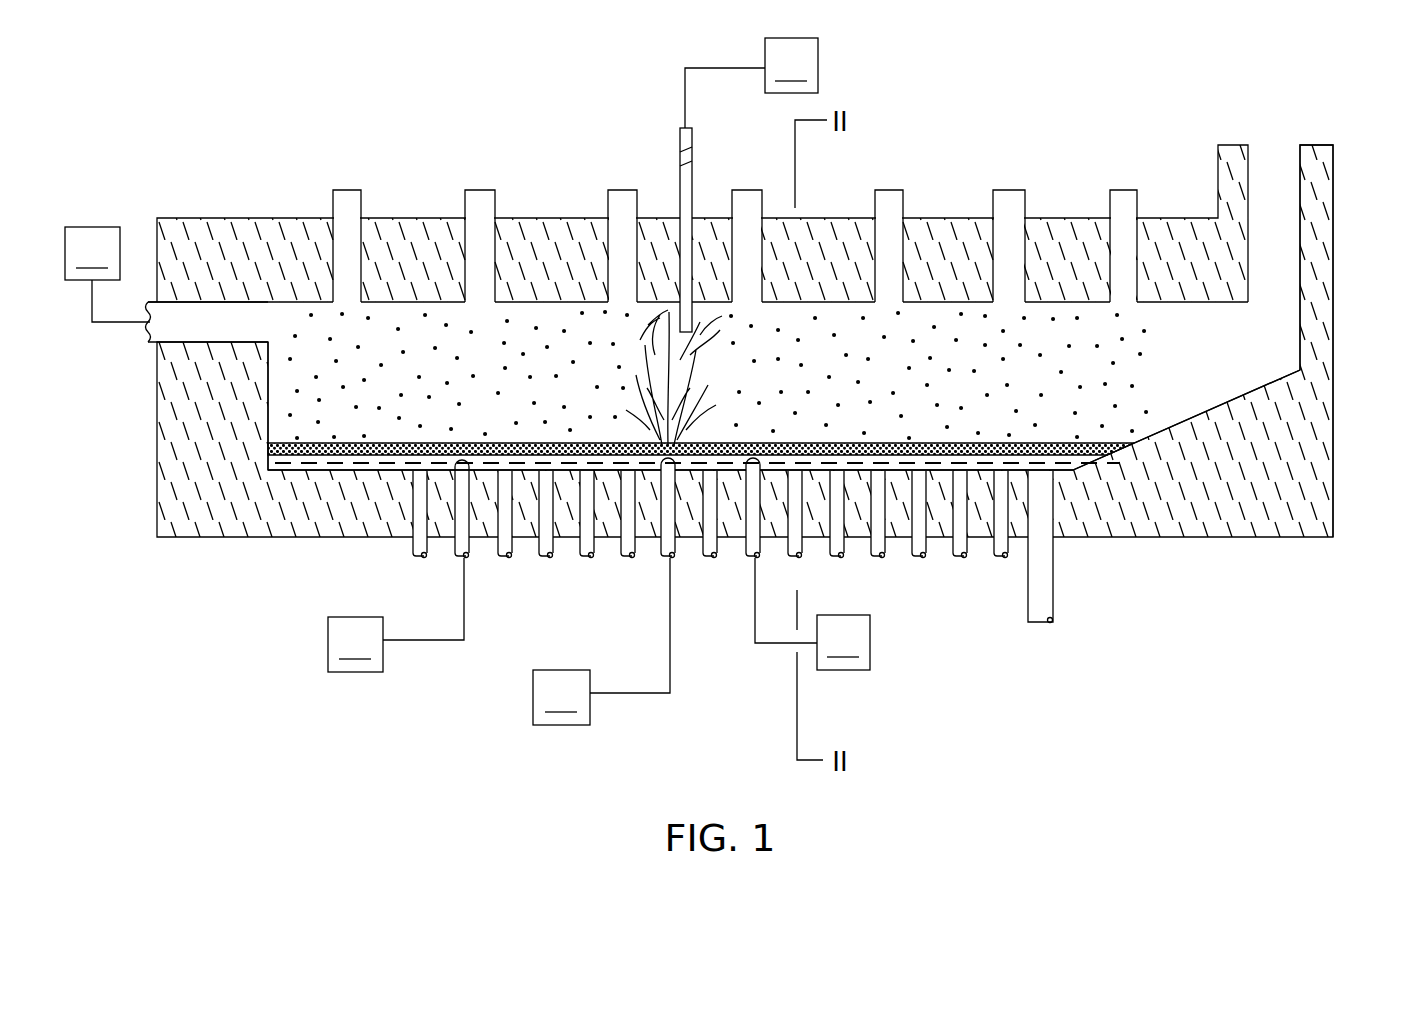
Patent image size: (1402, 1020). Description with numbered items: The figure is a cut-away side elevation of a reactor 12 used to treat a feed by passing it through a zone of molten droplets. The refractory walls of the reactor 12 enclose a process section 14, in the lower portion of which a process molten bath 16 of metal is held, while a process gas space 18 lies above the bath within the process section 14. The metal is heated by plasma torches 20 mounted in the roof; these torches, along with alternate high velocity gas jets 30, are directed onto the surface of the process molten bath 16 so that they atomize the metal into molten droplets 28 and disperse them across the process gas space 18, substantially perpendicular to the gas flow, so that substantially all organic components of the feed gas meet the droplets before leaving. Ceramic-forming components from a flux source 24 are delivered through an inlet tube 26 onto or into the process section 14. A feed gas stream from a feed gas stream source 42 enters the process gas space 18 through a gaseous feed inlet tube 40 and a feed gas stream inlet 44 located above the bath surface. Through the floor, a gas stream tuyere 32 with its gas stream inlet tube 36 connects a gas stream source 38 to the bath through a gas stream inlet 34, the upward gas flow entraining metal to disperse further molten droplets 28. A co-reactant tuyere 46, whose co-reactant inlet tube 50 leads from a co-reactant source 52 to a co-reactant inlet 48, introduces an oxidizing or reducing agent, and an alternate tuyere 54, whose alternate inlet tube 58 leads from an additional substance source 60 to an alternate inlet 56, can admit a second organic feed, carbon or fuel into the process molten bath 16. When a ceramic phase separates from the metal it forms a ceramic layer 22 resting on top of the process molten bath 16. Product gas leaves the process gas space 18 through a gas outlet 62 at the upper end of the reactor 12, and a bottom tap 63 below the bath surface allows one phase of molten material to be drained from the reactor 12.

The reactor 12 is at (237, 542).
The process section 14 is at (985, 400).
The process molten bath 16 is at (1069, 473).
The process gas space 18 is at (547, 362).
The plasma torches 20 is at (346, 190).
The ceramic layer 22 is at (1120, 460).
The flux source 24 is at (751, 83).
The inlet tube 26 is at (695, 166).
The molten droplets 28 is at (392, 370).
The alternate high velocity gas jets 30 is at (478, 190).
The gas stream tuyere 32 is at (709, 557).
The gas stream inlet 34 is at (659, 559).
The gas stream inlet tube 36 is at (413, 549).
The gas stream source 38 is at (601, 641).
The gaseous feed inlet tube 40 is at (205, 322).
The feed gas stream source 42 is at (107, 274).
The feed gas stream inlet 44 is at (268, 343).
The co-reactant tuyere 46 is at (463, 480).
The co-reactant inlet 48 is at (470, 470).
The co-reactant inlet tube 50 is at (461, 560).
The co-reactant source 52 is at (396, 615).
The alternate tuyere 54 is at (762, 483).
The alternate inlet 56 is at (749, 557).
The alternate inlet tube 58 is at (506, 556).
The additional substance source 60 is at (812, 614).
The gas outlet 62 is at (1310, 145).
The bottom tap 63 is at (1040, 597).